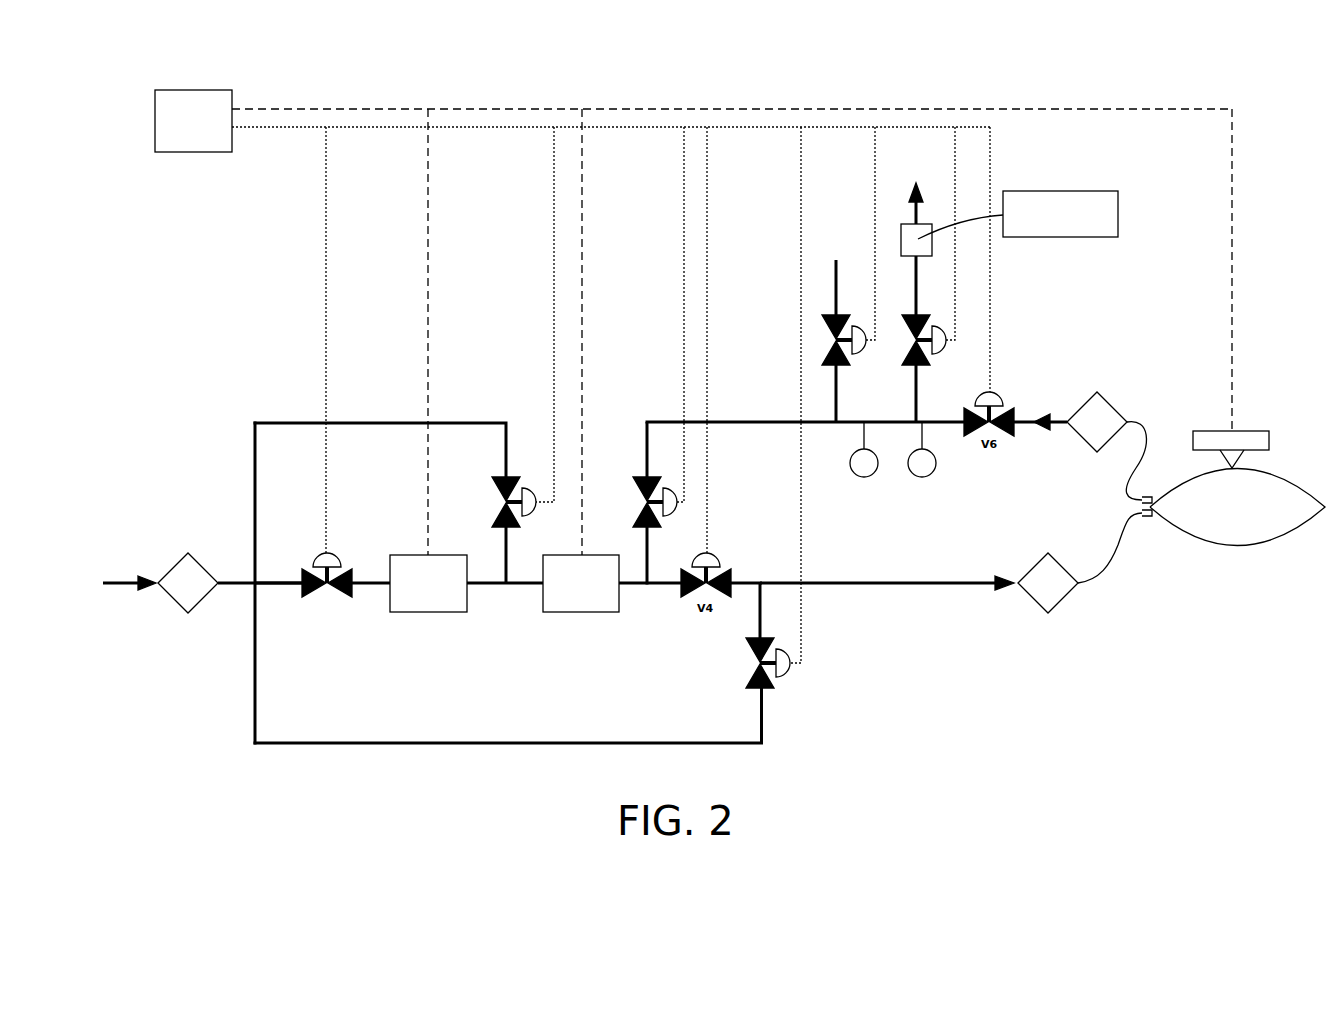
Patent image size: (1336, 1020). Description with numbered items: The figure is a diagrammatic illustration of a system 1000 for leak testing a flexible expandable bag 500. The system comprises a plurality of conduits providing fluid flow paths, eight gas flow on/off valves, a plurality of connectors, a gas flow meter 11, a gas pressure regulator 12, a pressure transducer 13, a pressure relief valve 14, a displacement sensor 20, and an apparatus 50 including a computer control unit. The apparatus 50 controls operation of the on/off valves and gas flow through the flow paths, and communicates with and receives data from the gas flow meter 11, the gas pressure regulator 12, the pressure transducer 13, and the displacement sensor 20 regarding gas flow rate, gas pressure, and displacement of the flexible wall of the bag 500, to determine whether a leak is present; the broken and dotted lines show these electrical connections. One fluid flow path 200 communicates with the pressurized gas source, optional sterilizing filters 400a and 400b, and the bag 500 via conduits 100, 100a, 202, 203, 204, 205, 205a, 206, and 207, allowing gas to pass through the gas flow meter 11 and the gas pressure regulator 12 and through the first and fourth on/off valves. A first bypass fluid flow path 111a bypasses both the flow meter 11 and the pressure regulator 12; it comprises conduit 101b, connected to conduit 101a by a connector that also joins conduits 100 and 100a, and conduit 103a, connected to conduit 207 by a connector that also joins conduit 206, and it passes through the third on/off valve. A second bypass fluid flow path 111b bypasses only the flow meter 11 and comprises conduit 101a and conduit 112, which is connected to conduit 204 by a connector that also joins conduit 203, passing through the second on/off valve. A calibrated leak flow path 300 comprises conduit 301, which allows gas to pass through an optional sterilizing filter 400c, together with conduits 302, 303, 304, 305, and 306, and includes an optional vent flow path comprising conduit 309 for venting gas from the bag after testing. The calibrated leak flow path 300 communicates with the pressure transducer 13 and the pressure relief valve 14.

The system 1000 is at (119, 113).
The apparatus including a computer control unit 50 is at (192, 152).
The conduit 100 is at (228, 588).
The conduit 100a is at (270, 586).
The sterilizing filter 400a is at (172, 605).
The conduit 202 is at (367, 580).
The gas flow meter 11 is at (412, 612).
The conduit 203 is at (485, 588).
The conduit 204 is at (514, 581).
The gas pressure regulator 12 is at (580, 612).
The conduit 205a is at (665, 586).
The conduit 206 is at (752, 580).
The conduit 207 is at (830, 586).
The fluid flow path 200 is at (480, 585).
The conduit 101a is at (255, 432).
The conduit 101b is at (253, 668).
The first bypass fluid flow path 111a is at (423, 746).
The second bypass fluid flow path 111b is at (501, 458).
The conduit 112 is at (505, 555).
The conduit 103a is at (759, 609).
The conduit 205 is at (643, 578).
The conduit 306 is at (650, 562).
The conduit 304 is at (660, 420).
The calibrated leak flow path 300 is at (755, 417).
The conduit 309 is at (833, 400).
The conduit 303 is at (890, 418).
The pressure transducer 13 is at (864, 449).
The pressure relief valve 14 is at (922, 449).
The conduit 305 is at (918, 400).
The conduit 302 is at (945, 425).
The conduit 301 is at (1050, 432).
The sterilizing filter 400c is at (1082, 402).
The sterilizing filter 400b is at (1033, 557).
The flexible expandable bag 500 is at (1235, 545).
The displacement sensor 20 is at (1205, 428).